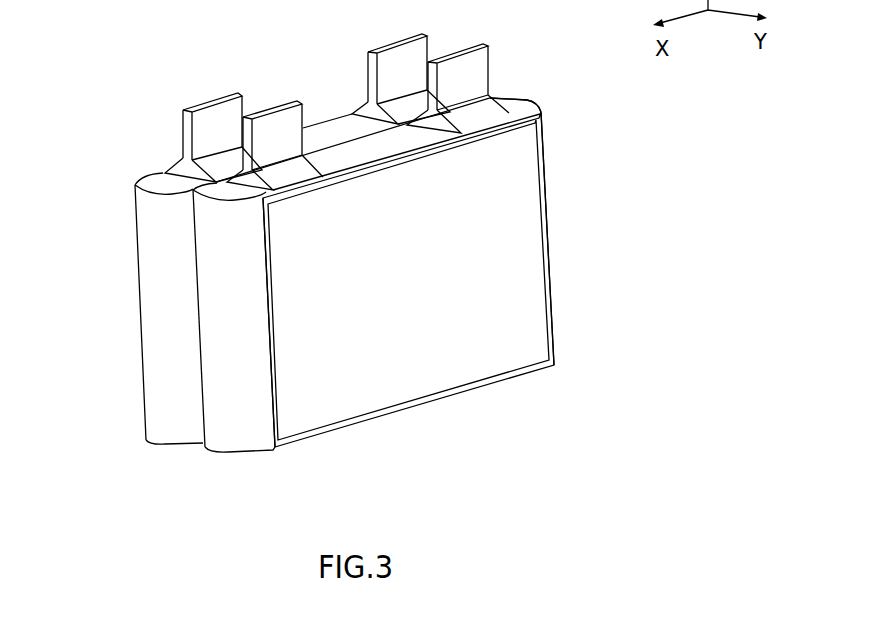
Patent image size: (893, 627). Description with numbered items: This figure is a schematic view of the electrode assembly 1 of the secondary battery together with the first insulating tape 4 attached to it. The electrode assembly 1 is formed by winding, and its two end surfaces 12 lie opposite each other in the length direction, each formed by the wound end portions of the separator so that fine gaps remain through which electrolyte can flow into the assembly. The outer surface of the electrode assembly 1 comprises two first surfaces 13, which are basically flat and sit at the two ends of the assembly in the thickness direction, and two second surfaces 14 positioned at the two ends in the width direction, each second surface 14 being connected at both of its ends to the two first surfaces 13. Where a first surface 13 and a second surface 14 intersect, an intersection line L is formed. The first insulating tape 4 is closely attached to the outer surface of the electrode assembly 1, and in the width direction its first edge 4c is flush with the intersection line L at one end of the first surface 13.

The electrode assembly 1 is at (334, 270).
The first insulating tape 4 is at (412, 272).
The first edge 4c is at (277, 365).
The end surface 12 is at (520, 107).
The first surface 13 is at (541, 113).
The second surface 14 is at (223, 430).
The intersection line L is at (268, 322).